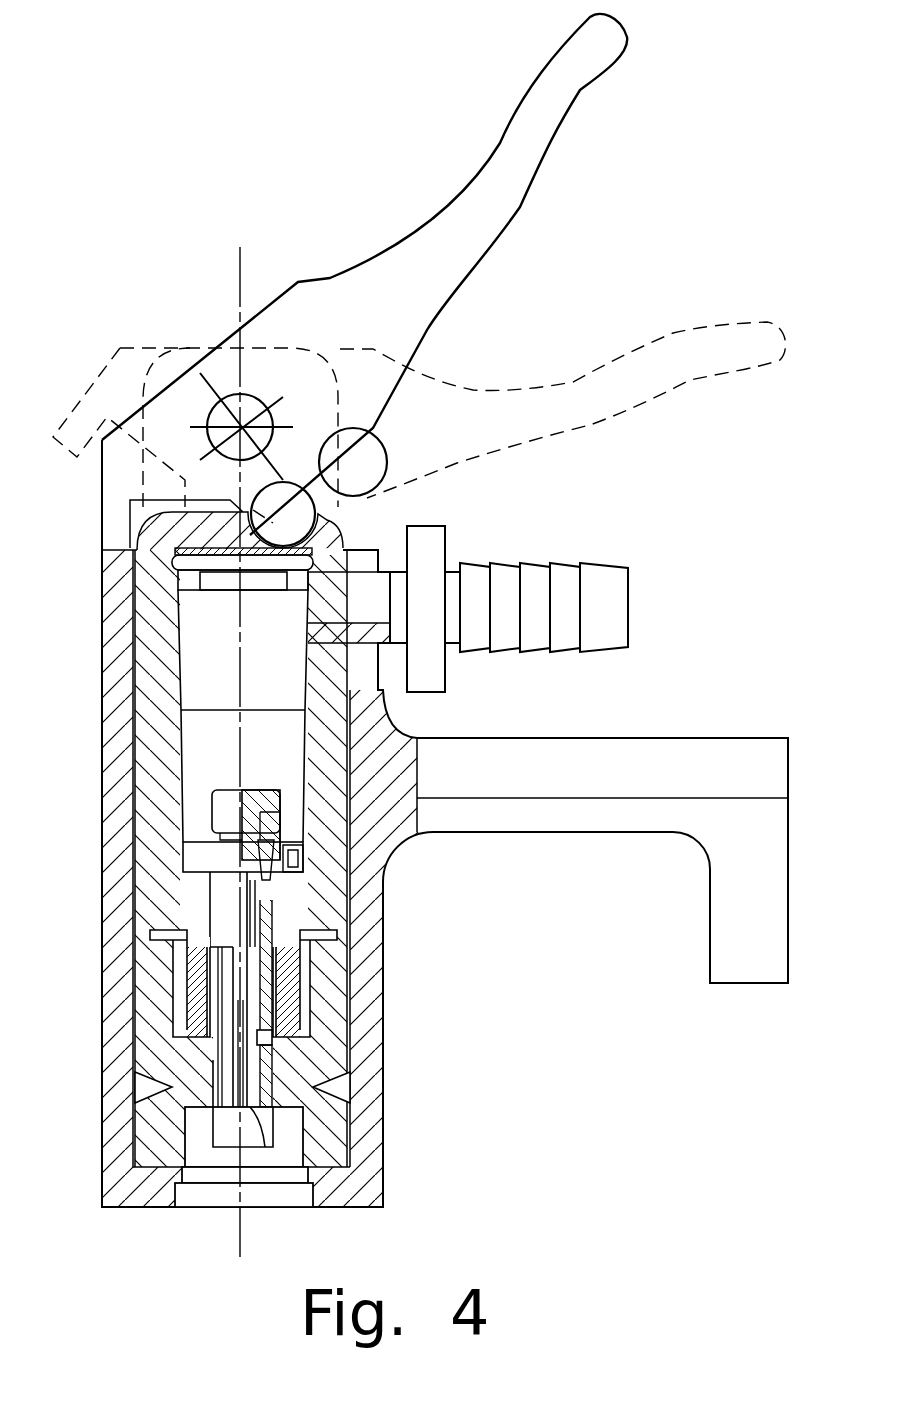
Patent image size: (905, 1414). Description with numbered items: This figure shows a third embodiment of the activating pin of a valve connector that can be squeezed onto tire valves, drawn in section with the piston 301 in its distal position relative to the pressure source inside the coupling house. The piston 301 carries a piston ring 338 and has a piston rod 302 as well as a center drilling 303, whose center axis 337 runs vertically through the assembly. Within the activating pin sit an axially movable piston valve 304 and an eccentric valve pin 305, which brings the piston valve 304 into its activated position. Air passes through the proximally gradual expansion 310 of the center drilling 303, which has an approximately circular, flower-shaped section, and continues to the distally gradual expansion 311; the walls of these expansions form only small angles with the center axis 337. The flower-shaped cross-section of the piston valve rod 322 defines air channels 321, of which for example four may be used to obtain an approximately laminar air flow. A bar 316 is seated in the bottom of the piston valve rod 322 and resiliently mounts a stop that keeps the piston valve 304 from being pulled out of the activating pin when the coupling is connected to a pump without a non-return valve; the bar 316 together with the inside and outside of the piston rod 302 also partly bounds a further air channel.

The piston 301 is at (202, 873).
The piston rod 302 is at (223, 935).
The center drilling 303 is at (253, 1080).
The piston valve 304 is at (261, 790).
The eccentric valve pin 305 is at (285, 885).
The proximally gradual expansion 310 is at (300, 852).
The distally gradual expansion 311 is at (260, 1125).
The bar 316 is at (257, 1012).
The air channels 321 is at (247, 902).
The piston valve rod 322 is at (257, 935).
The center axis 337 is at (243, 1247).
The piston ring 338 is at (193, 856).